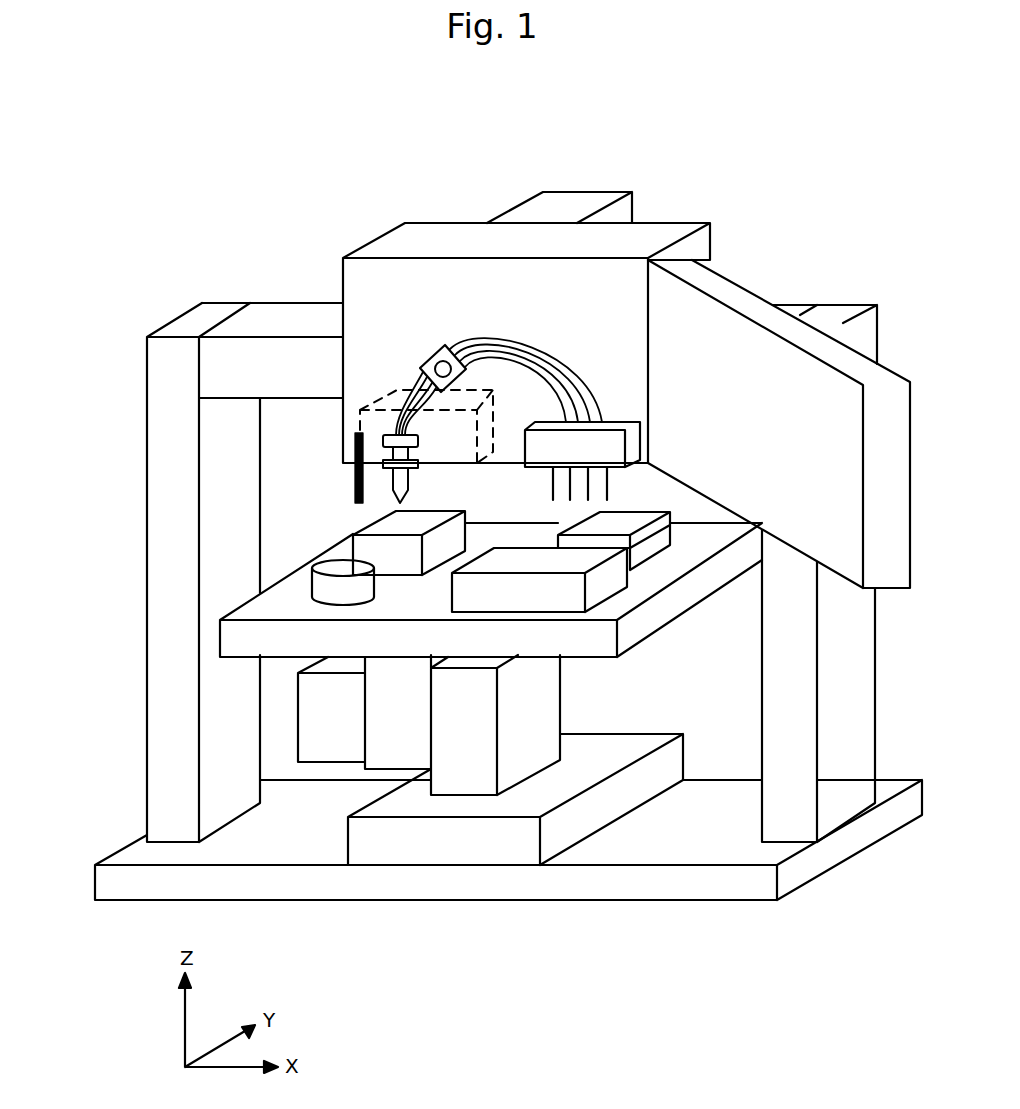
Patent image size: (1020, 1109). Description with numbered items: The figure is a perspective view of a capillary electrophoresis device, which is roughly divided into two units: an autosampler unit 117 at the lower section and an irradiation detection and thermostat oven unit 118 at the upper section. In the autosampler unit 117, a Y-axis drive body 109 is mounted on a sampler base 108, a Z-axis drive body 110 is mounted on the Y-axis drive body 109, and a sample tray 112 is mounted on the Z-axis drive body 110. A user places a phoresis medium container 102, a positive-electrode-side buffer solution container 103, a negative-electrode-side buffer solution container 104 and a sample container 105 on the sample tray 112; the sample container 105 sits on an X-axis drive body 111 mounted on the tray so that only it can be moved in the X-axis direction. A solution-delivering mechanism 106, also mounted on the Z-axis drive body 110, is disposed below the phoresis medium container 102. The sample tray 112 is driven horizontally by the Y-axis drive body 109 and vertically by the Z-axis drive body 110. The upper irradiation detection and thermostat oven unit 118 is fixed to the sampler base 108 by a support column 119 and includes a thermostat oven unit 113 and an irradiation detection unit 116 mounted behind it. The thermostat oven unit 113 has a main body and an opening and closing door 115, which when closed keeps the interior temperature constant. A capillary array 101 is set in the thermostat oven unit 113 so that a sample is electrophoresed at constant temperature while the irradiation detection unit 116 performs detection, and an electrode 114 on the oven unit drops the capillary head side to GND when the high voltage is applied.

The capillary array 101 is at (557, 340).
The phoresis medium container 102 is at (317, 583).
The positive-electrode-side buffer solution container 103 is at (382, 525).
The negative-electrode-side buffer solution container 104 is at (613, 590).
The sample container 105 is at (615, 520).
The solution-delivering mechanism 106 is at (312, 748).
The sampler base 108 is at (795, 872).
The Y-axis drive body 109 is at (550, 692).
The Z-axis drive body 110 is at (382, 753).
The X-axis drive body 111 is at (663, 547).
The sample tray 112 is at (253, 642).
The thermostat oven unit 113 is at (428, 235).
The electrode 114 is at (357, 454).
The opening and closing door 115 is at (732, 286).
The irradiation detection unit 116 is at (578, 203).
The autosampler unit 117 is at (112, 547).
The irradiation detection and thermostat oven unit 118 is at (112, 217).
The support column 119 is at (157, 528).